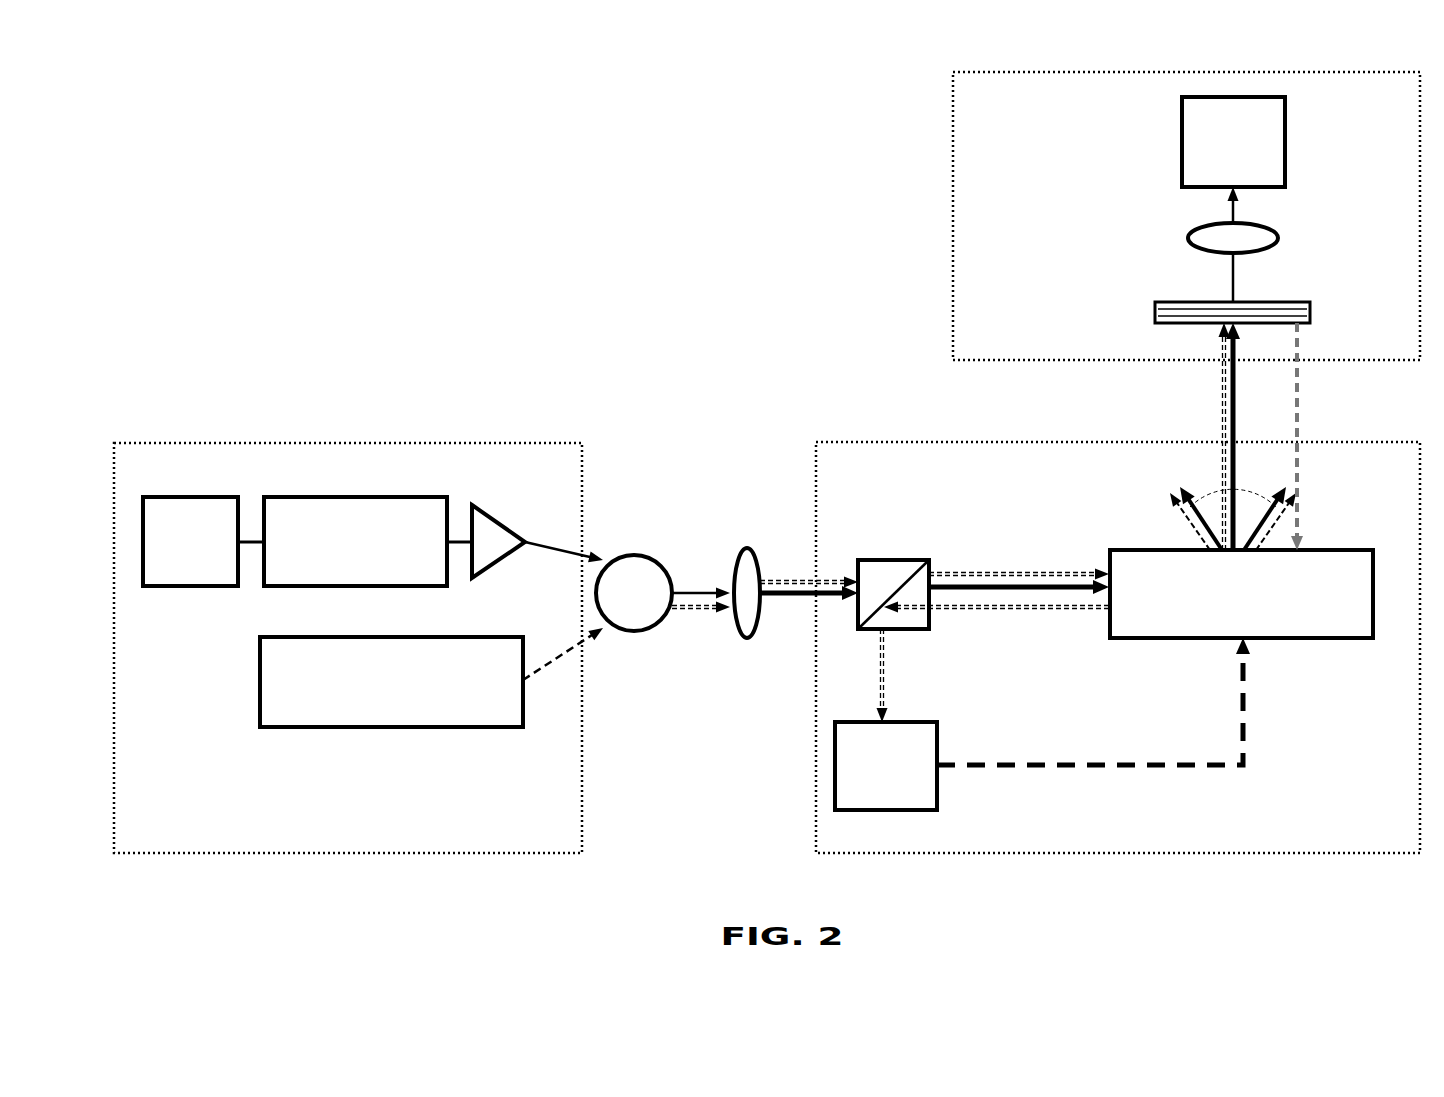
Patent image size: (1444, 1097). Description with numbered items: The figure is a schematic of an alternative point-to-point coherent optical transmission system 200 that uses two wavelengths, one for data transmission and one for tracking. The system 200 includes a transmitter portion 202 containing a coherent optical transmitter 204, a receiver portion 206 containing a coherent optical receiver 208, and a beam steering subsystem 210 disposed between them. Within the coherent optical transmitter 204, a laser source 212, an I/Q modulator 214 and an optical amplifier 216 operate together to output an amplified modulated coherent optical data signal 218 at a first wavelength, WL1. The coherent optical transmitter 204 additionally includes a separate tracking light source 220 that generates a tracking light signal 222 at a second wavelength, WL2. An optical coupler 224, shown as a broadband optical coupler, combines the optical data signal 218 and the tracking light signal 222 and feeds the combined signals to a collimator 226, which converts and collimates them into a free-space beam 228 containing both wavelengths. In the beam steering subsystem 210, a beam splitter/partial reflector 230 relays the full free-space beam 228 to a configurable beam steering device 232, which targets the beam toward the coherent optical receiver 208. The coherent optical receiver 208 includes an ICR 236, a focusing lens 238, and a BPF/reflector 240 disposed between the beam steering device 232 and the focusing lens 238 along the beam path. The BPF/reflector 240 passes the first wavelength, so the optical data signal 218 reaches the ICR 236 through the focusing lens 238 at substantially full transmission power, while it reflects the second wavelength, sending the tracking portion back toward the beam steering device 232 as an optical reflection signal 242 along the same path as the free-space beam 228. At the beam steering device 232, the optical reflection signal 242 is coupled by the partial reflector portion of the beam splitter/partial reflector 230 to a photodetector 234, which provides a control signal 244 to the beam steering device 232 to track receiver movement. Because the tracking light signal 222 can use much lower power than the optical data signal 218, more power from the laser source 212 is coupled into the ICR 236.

The P2P coherent optical transmission system 200 is at (340, 95).
The transmitter portion 202 is at (312, 394).
The coherent optical transmitter 204 is at (328, 829).
The receiver portion 206 is at (923, 130).
The coherent optical receiver 208 is at (1031, 160).
The beam steering subsystem 210 is at (845, 442).
The laser source 212 is at (172, 572).
The I/Q modulator 214 is at (336, 572).
The optical amplifier 216 is at (500, 521).
The optical data signal 218 is at (580, 552).
The tracking light source 220 is at (373, 712).
The tracking light signal 222 is at (535, 677).
The optical coupler 224 is at (615, 622).
The collimator 226 is at (747, 638).
The free-space beam 228 is at (785, 567).
The beam splitter/partial reflector 230 is at (893, 558).
The beam steering device 232 is at (1222, 625).
The photodetector 234 is at (867, 799).
The ICR 236 is at (1214, 173).
The focusing lens 238 is at (1190, 238).
The BPF/reflector 240 is at (1152, 315).
The optical reflection signal 242 is at (887, 680).
The control signal 244 is at (1247, 742).